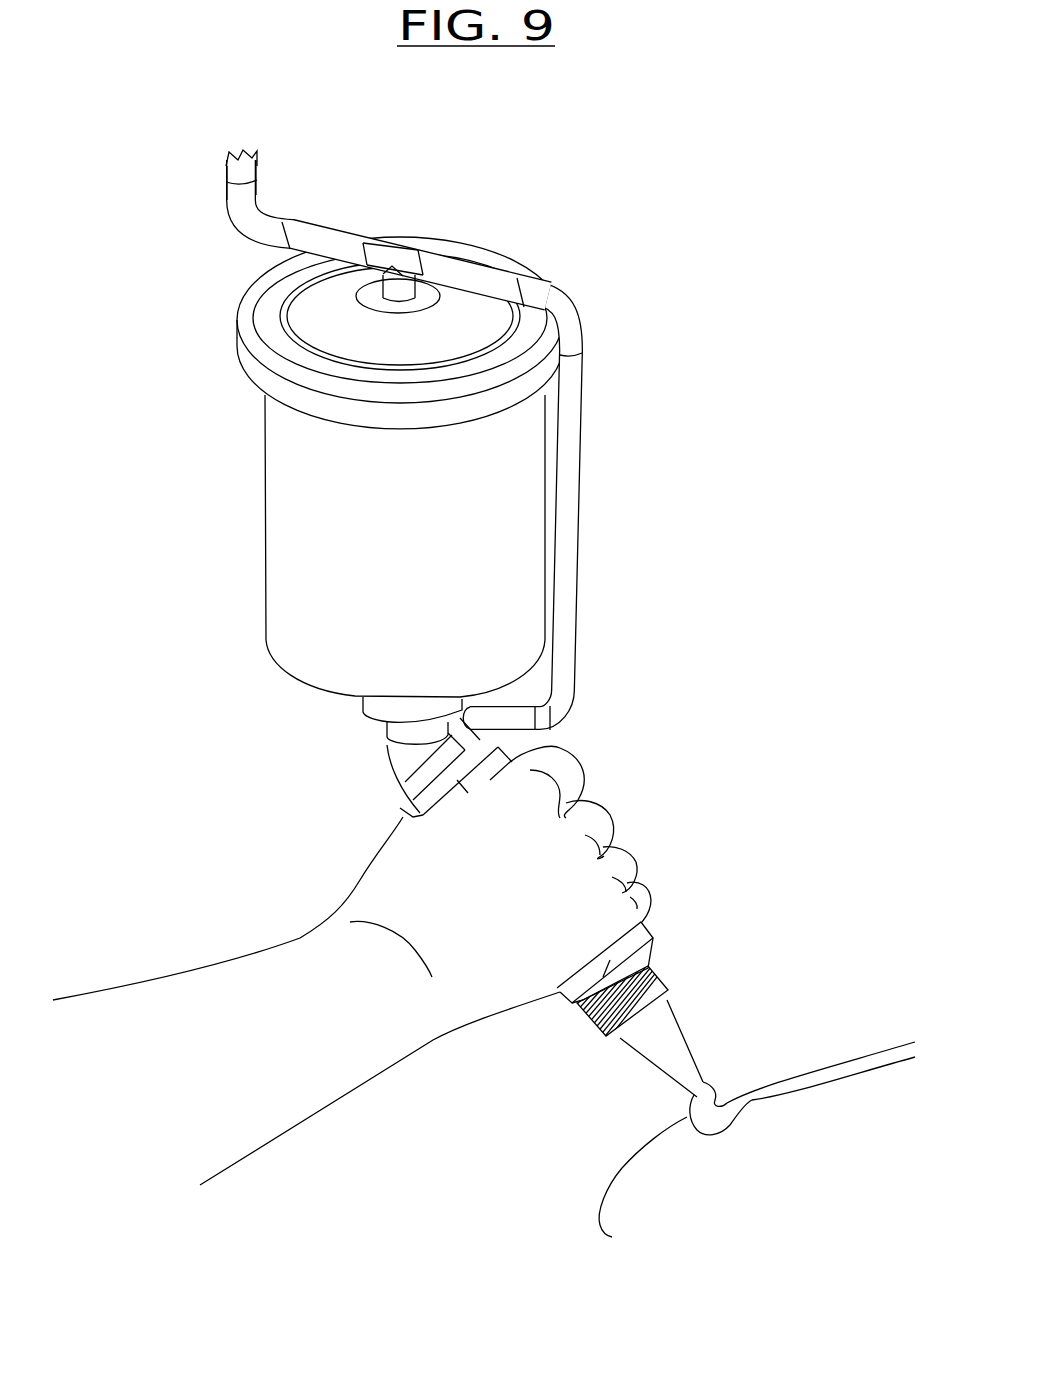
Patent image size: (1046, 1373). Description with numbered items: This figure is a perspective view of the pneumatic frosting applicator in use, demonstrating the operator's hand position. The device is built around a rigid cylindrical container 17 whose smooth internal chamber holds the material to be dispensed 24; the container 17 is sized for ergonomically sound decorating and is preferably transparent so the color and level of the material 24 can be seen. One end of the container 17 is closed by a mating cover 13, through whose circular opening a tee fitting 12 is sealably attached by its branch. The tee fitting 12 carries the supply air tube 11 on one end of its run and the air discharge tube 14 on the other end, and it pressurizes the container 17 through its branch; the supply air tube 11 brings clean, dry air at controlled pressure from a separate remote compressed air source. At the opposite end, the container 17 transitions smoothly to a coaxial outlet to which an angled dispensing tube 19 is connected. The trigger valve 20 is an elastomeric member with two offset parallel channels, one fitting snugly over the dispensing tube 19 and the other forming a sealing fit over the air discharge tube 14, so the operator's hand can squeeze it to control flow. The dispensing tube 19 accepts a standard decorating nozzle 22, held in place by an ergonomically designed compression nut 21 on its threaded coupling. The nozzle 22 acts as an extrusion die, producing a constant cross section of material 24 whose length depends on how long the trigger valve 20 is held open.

The supply air tube 11 is at (262, 193).
The tee fitting 12 is at (397, 250).
The cover 13 is at (510, 252).
The air discharge tube 14 is at (580, 487).
The container 17 is at (280, 505).
The dispensing tube 19 is at (387, 757).
The trigger valve 20 is at (648, 935).
The compression nut 21 is at (657, 983).
The decorating nozzle 22 is at (676, 1040).
The material to be dispensed 24 is at (742, 1102).